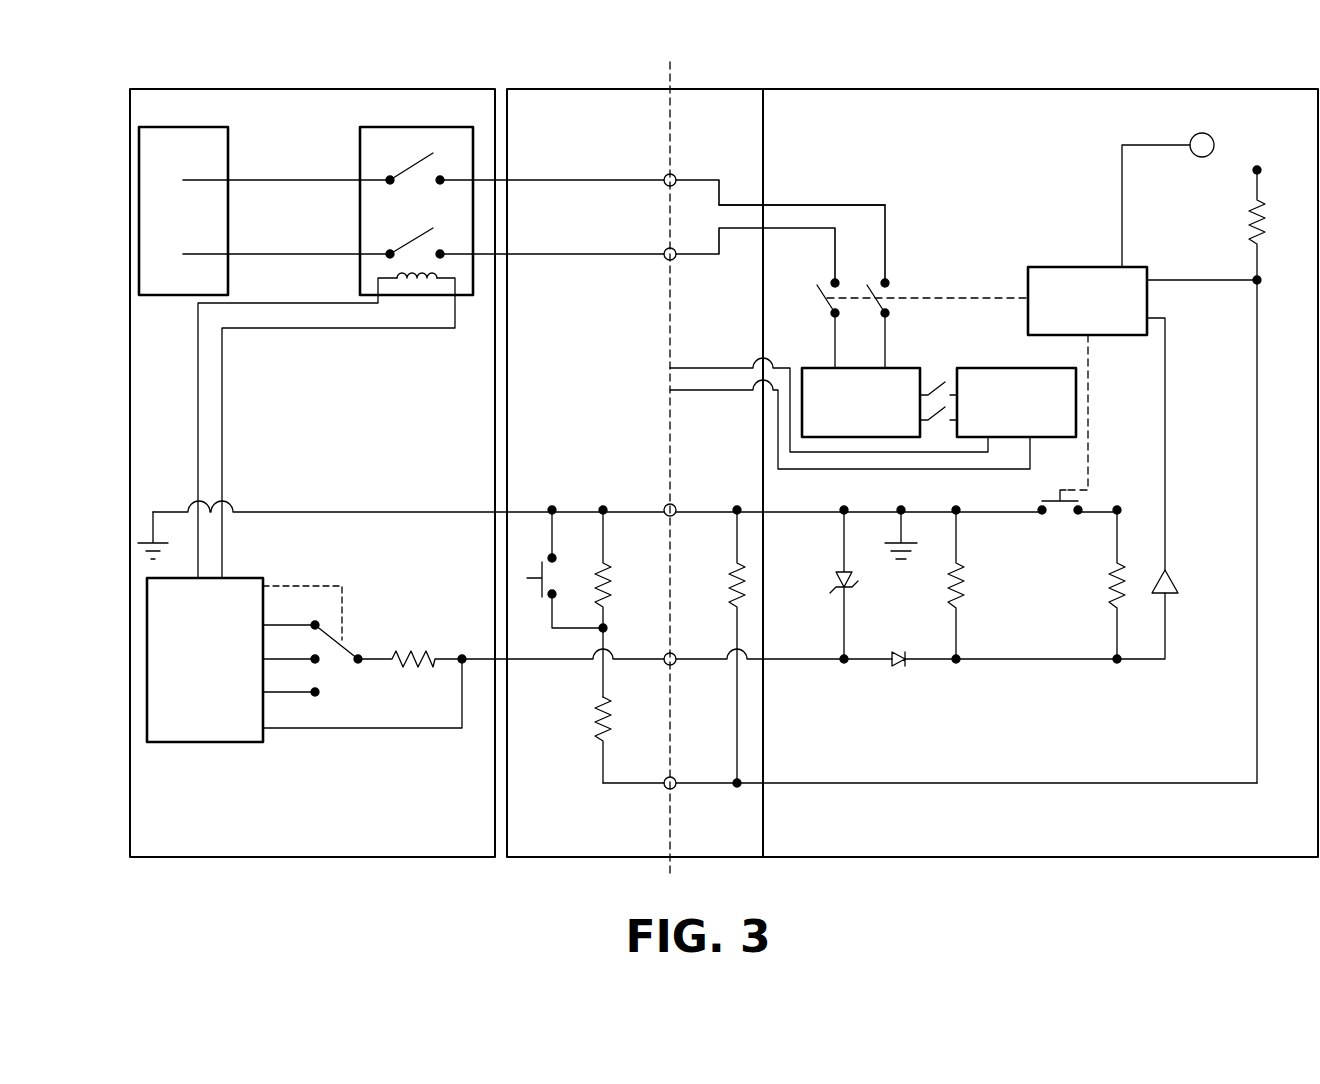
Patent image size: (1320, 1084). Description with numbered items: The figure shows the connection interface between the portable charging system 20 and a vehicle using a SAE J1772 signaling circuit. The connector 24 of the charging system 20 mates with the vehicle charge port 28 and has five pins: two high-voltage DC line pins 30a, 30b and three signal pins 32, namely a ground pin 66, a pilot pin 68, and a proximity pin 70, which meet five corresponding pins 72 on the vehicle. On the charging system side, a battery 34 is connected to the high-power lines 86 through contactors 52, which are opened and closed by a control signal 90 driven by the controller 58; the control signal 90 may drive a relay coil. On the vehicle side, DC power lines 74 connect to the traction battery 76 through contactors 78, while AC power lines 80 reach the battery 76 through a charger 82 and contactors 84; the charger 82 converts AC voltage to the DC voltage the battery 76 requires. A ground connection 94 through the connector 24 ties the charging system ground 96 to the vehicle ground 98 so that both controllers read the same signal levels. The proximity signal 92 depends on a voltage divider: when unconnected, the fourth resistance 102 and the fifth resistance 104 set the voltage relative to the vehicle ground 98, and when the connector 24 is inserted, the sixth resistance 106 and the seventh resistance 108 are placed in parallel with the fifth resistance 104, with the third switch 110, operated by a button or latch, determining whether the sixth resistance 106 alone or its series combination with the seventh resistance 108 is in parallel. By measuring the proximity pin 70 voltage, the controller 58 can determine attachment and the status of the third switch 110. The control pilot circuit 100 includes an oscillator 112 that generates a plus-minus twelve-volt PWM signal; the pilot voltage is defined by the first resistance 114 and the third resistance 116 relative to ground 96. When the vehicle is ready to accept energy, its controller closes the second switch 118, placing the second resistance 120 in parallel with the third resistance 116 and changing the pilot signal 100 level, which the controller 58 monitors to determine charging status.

The portable DC charging system 20 is at (245, 88).
The connector 24 is at (587, 88).
The vehicle charge port 28 is at (713, 88).
The high-voltage DC line pin 30a is at (666, 175).
The high-voltage DC line pin 30b is at (676, 258).
The signal pins 32 is at (605, 493).
The battery 34 is at (139, 210).
The contactors 52 is at (412, 240).
The controller 58 is at (147, 659).
The ground pin 66 is at (665, 508).
The pilot pin 68 is at (667, 664).
The proximity pin 70 is at (676, 789).
The corresponding pins 72 is at (666, 250).
The DC power lines 74 is at (782, 205).
The battery 76 is at (820, 366).
The contactors 78 is at (890, 304).
The battery power line 80 is at (688, 368).
The charger 82 is at (1077, 400).
The contactors 84 is at (923, 392).
The high-power lines 86 is at (285, 178).
The control signal 90 is at (350, 330).
The proximity signal 92 is at (600, 753).
The ground connection 94 is at (382, 510).
The ground connection 96 is at (153, 527).
The ground connection 98 is at (900, 565).
The control pilot circuit 100 is at (482, 662).
The resistance R4 102 is at (1263, 225).
The resistance R5 104 is at (745, 592).
The resistance R6 106 is at (538, 657).
The resistance R7 108 is at (607, 566).
The switch S3 110 is at (540, 588).
The oscillator 112 is at (311, 572).
The resistance R1 114 is at (418, 672).
The resistance R3 116 is at (963, 598).
The switch S2 118 is at (1058, 540).
The resistance R2 120 is at (685, 657).